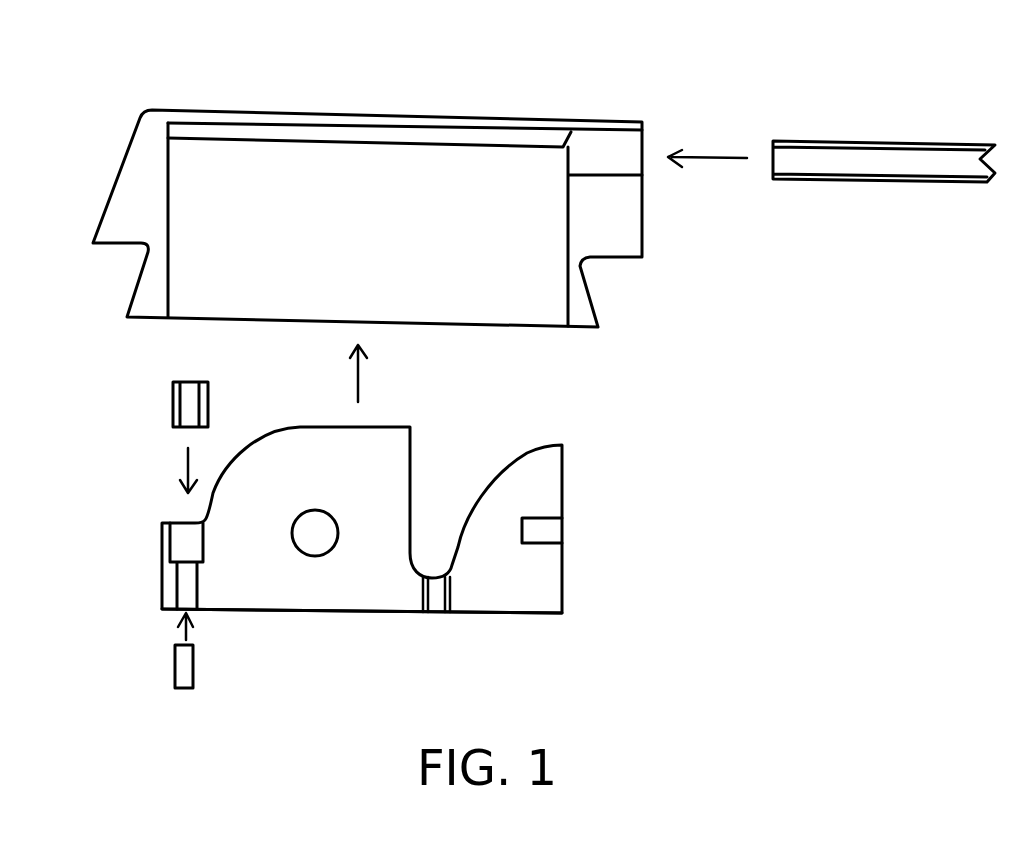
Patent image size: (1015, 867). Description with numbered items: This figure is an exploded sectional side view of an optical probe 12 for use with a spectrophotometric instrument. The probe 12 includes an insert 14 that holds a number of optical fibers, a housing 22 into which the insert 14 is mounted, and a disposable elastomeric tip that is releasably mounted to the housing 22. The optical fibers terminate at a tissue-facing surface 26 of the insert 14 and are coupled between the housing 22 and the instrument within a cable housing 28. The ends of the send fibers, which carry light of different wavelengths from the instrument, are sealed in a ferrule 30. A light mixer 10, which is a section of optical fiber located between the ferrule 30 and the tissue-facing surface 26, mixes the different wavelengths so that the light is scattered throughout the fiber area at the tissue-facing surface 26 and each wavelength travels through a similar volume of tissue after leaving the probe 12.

The light mixer 10 is at (178, 667).
The optical probe 12 is at (675, 355).
The insert 14 is at (557, 500).
The housing 22 is at (282, 133).
The tissue-facing surface 26 is at (345, 612).
The cable housing 28 is at (808, 180).
The ferrule 30 is at (170, 402).